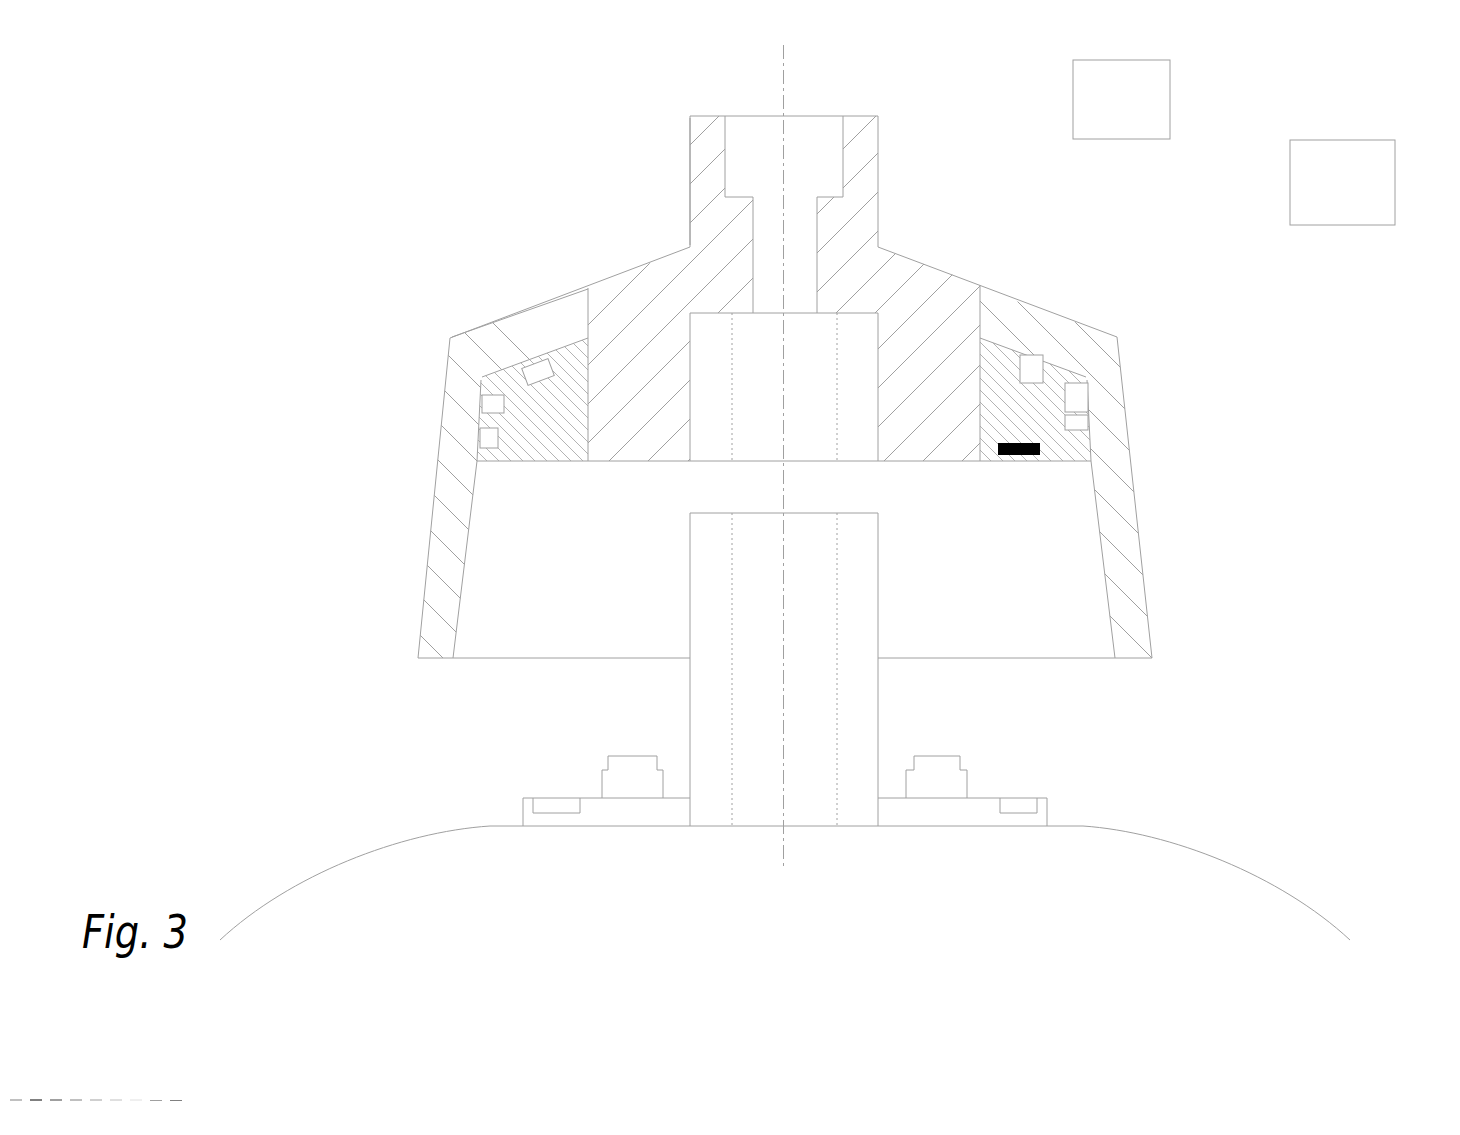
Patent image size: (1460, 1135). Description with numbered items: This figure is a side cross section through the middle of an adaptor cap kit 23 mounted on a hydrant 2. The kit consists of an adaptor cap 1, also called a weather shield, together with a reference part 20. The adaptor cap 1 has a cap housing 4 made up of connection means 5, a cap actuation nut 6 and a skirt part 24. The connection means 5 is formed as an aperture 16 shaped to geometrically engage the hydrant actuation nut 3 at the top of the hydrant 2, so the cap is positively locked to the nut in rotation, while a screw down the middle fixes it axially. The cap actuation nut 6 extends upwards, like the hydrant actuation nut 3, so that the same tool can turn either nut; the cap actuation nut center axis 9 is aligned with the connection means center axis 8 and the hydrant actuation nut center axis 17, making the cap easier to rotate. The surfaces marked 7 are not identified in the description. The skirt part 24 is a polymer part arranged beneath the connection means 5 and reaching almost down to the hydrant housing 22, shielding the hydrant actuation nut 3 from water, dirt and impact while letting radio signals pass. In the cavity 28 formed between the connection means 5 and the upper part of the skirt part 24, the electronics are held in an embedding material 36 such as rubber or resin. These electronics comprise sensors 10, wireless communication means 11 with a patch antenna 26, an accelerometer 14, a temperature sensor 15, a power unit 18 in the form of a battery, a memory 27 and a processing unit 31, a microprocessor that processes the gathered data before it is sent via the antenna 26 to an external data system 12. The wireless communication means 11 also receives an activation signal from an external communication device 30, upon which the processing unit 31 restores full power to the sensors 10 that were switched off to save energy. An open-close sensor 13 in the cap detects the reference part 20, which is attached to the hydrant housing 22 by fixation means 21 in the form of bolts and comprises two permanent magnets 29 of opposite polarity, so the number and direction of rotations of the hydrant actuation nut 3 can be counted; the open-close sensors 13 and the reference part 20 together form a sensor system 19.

The adaptor cap 1 is at (239, 202).
The hydrant 2 is at (204, 810).
The hydrant actuation nut 3 is at (812, 744).
The cap housing 4 is at (762, 393).
The connection means 5 is at (900, 415).
The cap actuation nut 6 is at (690, 123).
The contact surface 7 is at (690, 170).
The connection means center axis 8 is at (787, 380).
The cap actuation nut center axis 9 is at (785, 108).
The sensors 10 is at (810, 377).
The wireless communication means 11 is at (1239, 400).
The external data system 12 is at (1138, 338).
The open-close sensor 13 is at (1018, 462).
The accelerometer 14 is at (542, 367).
The temperature sensor 15 is at (485, 403).
The aperture 16 is at (773, 416).
The hydrant actuation nut center axis 17 is at (787, 587).
The power unit 18 is at (1033, 363).
The sensor system 19 is at (572, 741).
The reference part 20 is at (572, 741).
The fixation means 21 is at (620, 780).
The hydrant housing 22 is at (1270, 880).
The adaptor cap kit 23 is at (540, 818).
The skirt part 24 is at (495, 345).
The antenna 26 is at (1080, 390).
The memory 27 is at (1080, 413).
The cavity 28 is at (597, 503).
The permanent magnets 29 is at (552, 802).
The external communication device 30 is at (1076, 282).
The processing unit 31 is at (483, 440).
The embedding material 36 is at (513, 461).